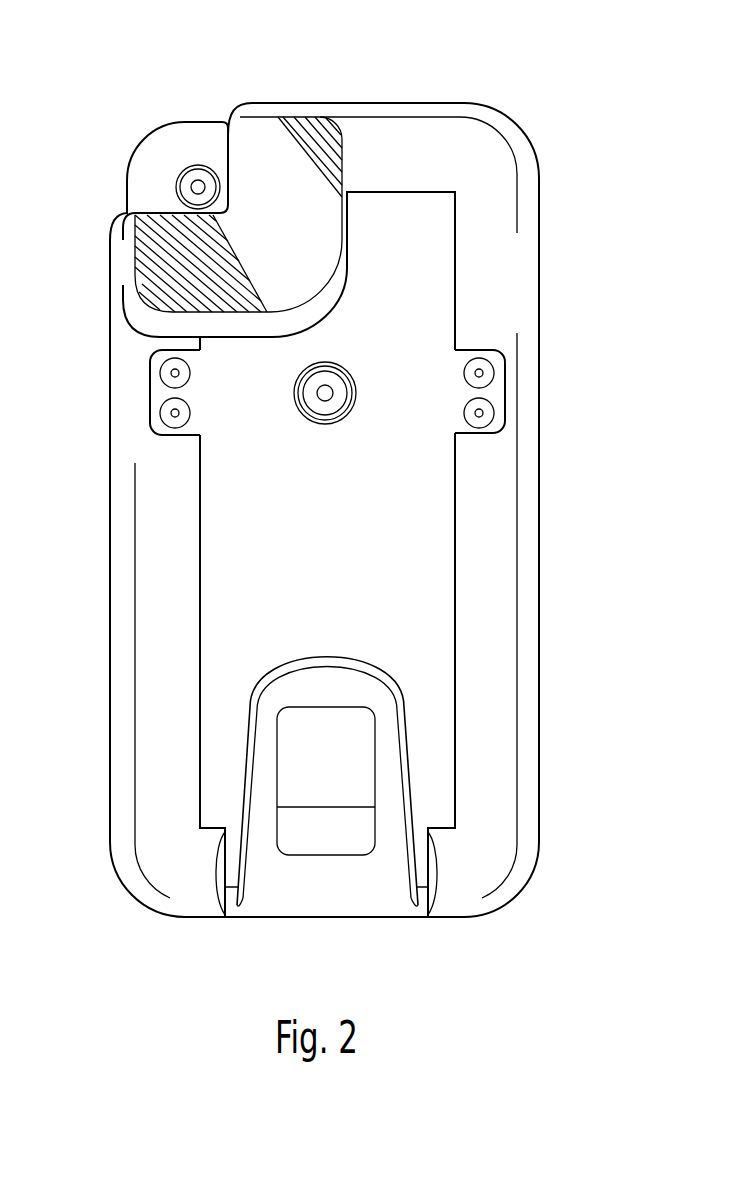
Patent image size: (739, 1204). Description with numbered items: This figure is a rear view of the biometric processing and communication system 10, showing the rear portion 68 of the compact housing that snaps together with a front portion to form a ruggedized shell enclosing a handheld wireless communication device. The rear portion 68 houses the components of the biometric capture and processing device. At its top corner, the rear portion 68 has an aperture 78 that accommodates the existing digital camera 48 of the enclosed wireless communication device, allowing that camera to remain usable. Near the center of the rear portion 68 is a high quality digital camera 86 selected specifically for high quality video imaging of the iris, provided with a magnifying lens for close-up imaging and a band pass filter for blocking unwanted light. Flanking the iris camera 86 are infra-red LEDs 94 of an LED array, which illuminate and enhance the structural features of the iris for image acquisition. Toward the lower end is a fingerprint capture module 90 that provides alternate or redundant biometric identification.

The biometric processing and communication system 10 is at (430, 97).
The digital camera 48 is at (190, 187).
The rear portion 68 is at (163, 880).
The aperture 78 is at (198, 168).
The high quality digital camera 86 is at (356, 385).
The fingerprint capture module 90 is at (346, 780).
The infra-red LEDs 94 is at (171, 415).